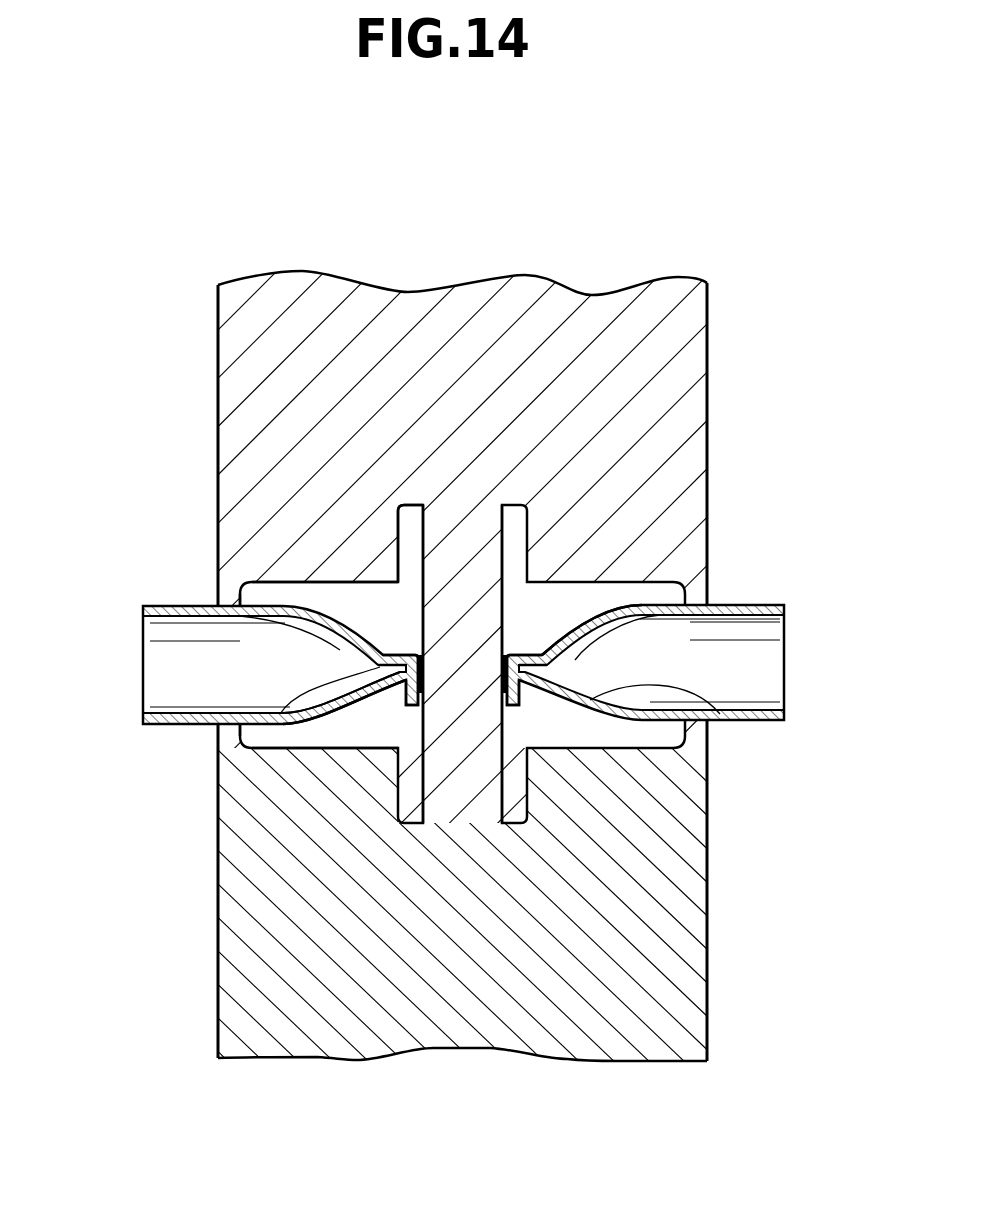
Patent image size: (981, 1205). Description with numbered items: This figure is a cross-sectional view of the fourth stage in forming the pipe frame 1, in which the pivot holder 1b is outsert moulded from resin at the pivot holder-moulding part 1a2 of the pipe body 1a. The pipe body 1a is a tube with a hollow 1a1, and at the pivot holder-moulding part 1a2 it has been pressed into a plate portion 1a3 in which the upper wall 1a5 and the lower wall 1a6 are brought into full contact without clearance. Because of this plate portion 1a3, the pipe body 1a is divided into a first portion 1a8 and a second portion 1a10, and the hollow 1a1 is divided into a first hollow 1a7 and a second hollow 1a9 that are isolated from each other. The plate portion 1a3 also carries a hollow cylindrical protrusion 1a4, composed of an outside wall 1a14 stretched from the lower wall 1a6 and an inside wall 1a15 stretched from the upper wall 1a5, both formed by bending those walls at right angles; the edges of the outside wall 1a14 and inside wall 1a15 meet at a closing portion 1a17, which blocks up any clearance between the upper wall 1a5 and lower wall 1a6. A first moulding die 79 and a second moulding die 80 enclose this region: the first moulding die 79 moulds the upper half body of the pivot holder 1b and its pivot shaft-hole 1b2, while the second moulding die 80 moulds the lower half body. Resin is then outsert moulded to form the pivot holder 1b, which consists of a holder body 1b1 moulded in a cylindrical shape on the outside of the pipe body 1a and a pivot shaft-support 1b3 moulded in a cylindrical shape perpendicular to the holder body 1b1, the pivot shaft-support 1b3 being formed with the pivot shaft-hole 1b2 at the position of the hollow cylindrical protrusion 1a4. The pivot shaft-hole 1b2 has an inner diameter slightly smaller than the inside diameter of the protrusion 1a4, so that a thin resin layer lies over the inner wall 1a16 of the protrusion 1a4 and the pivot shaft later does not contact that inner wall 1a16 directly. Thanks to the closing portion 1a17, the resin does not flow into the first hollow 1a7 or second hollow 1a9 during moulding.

The pipe frame 1 is at (758, 600).
The pipe body 1a is at (230, 724).
The hollow 1a1 is at (173, 658).
The pivot holder-moulding part 1a2 is at (548, 640).
The plate portion 1a3 is at (513, 655).
The hollow cylindrical protrusion 1a4 is at (514, 705).
The upper wall 1a5 is at (395, 655).
The lower wall 1a6 is at (392, 675).
The first hollow 1a7 is at (333, 645).
The first portion 1a8 is at (388, 690).
The second hollow 1a9 is at (648, 603).
The second portion 1a10 is at (722, 716).
The outside wall 1a14 is at (393, 688).
The inside wall 1a15 is at (425, 665).
The inner wall of the hollow cylindrical protrusion 1a16 is at (500, 662).
The closing portion 1a17 is at (407, 700).
The pivot holder 1b is at (615, 552).
The holder body 1b1 is at (260, 593).
The pivot shaft-hole 1b2 is at (430, 555).
The pivot shaft-support 1b3 is at (413, 518).
The first moulding die 79 is at (710, 318).
The second moulding die 80 is at (698, 1003).